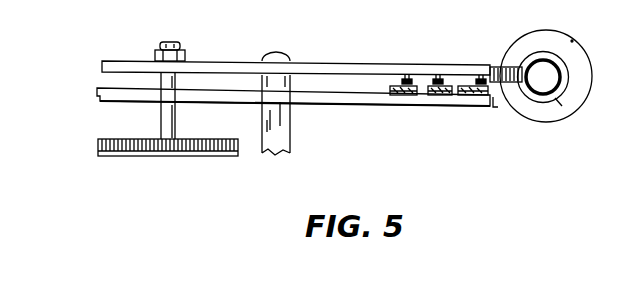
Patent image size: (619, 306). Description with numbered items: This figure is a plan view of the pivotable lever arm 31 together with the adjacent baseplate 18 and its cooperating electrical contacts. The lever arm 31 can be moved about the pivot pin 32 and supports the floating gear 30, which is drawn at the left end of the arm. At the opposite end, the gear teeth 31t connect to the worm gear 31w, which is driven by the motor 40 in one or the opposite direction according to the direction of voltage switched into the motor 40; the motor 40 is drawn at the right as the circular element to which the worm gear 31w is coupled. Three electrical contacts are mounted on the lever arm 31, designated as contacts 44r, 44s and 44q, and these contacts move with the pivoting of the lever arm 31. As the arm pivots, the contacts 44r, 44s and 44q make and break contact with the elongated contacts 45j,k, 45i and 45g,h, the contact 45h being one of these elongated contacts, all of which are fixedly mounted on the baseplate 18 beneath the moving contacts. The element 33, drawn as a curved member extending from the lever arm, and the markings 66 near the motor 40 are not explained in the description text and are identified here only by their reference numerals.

The pivotable lever arm 31 is at (102, 66).
The baseplate 18 is at (97, 90).
The floating gear 30 is at (98, 142).
The lever 33 is at (177, 85).
The pivot pin 32 is at (290, 147).
The electrical contact 44r is at (405, 75).
The electrical contact 44s is at (437, 76).
The electrical contact 44q is at (479, 76).
The elongated contact 45h is at (494, 41).
The elongated contacts 45j,k is at (397, 96).
The elongated contact 45i is at (434, 97).
The elongated contacts 45g,h is at (473, 97).
The motor 40 is at (558, 40).
The marks 66 is at (585, 45).
The gear teeth 31t is at (513, 97).
The worm gear 31w is at (563, 100).